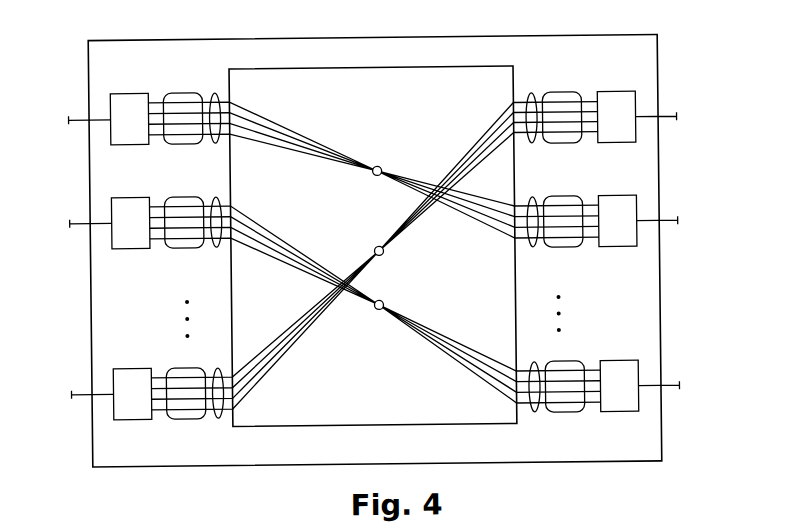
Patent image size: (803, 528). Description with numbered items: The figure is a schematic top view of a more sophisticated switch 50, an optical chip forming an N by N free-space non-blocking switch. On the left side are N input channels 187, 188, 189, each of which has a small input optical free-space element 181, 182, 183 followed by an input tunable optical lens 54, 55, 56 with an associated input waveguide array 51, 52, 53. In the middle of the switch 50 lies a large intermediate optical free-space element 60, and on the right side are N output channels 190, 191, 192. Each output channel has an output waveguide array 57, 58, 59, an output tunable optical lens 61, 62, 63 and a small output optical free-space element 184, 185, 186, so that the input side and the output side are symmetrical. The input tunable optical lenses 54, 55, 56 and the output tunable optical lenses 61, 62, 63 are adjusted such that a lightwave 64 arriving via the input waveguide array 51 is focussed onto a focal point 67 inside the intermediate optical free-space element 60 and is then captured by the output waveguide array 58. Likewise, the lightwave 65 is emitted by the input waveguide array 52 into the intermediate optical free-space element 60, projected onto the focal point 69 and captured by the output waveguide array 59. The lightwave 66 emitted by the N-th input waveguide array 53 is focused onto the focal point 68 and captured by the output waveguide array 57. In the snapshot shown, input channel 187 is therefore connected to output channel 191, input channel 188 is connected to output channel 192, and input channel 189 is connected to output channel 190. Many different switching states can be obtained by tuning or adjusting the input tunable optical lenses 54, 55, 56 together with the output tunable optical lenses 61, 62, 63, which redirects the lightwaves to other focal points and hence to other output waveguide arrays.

The switch 50 is at (175, 37).
The intermediate optical free-space element 60 is at (291, 426).
The input optical free-space element 181 is at (141, 91).
The input optical free-space element 182 is at (138, 247).
The input optical free-space element 183 is at (143, 418).
The output optical free-space element 184 is at (603, 94).
The output optical free-space element 185 is at (610, 249).
The output optical free-space element 186 is at (612, 414).
The input tunable optical lens 54 is at (185, 90).
The input tunable optical lens 55 is at (170, 194).
The input tunable optical lens 56 is at (177, 365).
The output tunable optical lens 61 is at (560, 94).
The output tunable optical lens 62 is at (576, 198).
The output tunable optical lens 63 is at (576, 363).
The input waveguide array 51 is at (216, 142).
The input waveguide array 52 is at (217, 246).
The input waveguide array 53 is at (219, 417).
The output waveguide array 57 is at (533, 145).
The output waveguide array 58 is at (533, 249).
The output waveguide array 59 is at (536, 414).
The lightwave 64 is at (289, 149).
The lightwave 65 is at (268, 255).
The lightwave 66 is at (289, 358).
The focal point 67 is at (379, 166).
The focal point 68 is at (383, 257).
The focal point 69 is at (379, 310).
The input channel 187 is at (72, 116).
The input channel 188 is at (74, 219).
The input channel 189 is at (76, 390).
The output channel 190 is at (676, 118).
The output channel 191 is at (676, 222).
The output channel 192 is at (678, 387).